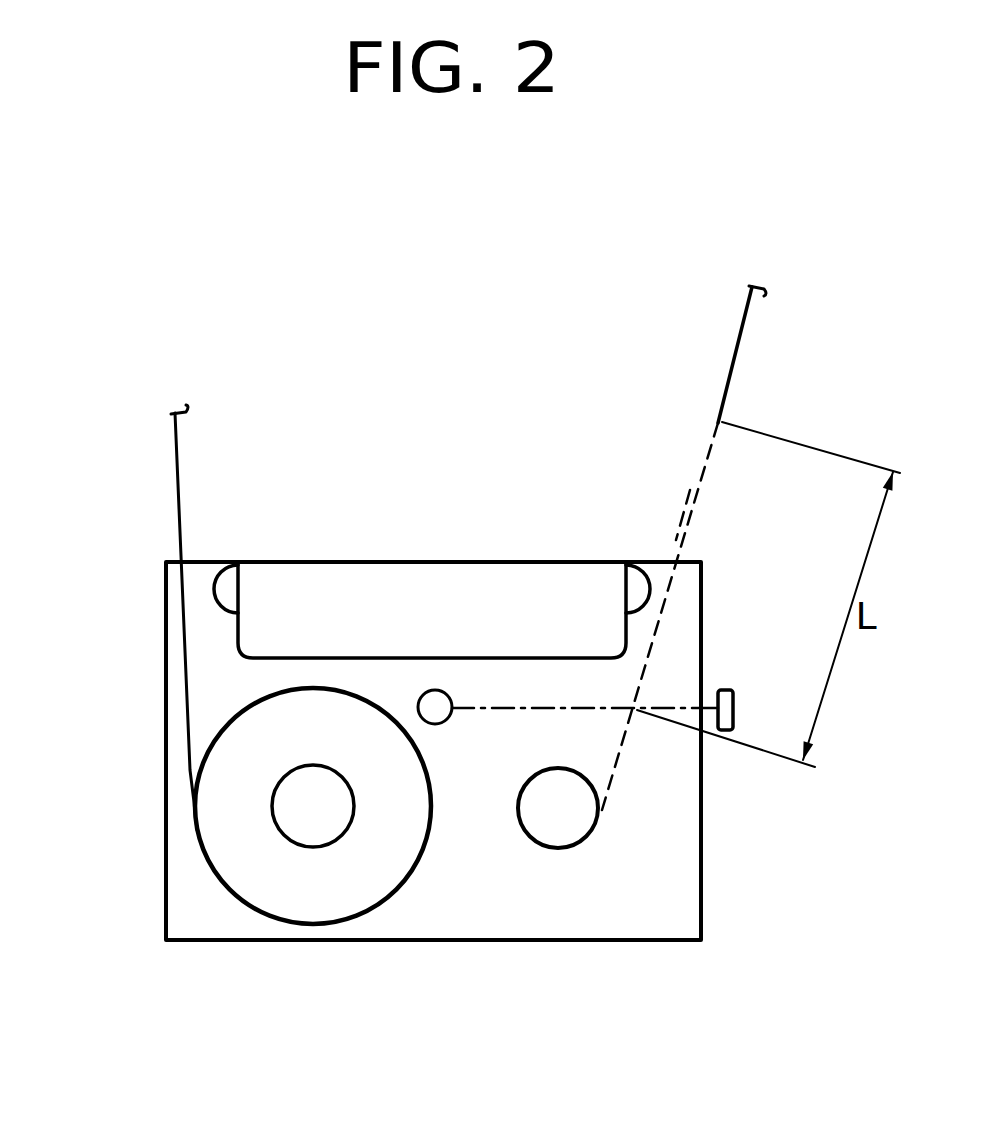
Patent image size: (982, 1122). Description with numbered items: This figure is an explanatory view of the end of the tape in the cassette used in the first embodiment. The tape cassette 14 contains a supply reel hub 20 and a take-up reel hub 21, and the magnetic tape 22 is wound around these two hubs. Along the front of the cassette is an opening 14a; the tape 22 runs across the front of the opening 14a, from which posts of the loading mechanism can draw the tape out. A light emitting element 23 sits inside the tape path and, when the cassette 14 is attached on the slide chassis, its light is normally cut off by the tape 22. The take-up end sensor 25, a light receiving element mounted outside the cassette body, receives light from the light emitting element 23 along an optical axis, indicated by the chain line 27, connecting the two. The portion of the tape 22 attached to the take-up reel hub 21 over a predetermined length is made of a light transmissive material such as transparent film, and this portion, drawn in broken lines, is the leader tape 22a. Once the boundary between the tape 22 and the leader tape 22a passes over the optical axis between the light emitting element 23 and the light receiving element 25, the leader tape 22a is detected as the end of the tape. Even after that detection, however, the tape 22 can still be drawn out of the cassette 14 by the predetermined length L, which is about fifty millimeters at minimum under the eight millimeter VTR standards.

The tape cassette 14 is at (166, 738).
The opening 14a is at (350, 658).
The supply reel hub 20 is at (352, 827).
The take-up reel hub 21 is at (570, 848).
The magnetic tape 22 is at (735, 360).
The leader tape 22a is at (695, 492).
The light emitting element 23 is at (438, 713).
The take-up end sensor 25 is at (736, 702).
The center line 27 is at (563, 708).